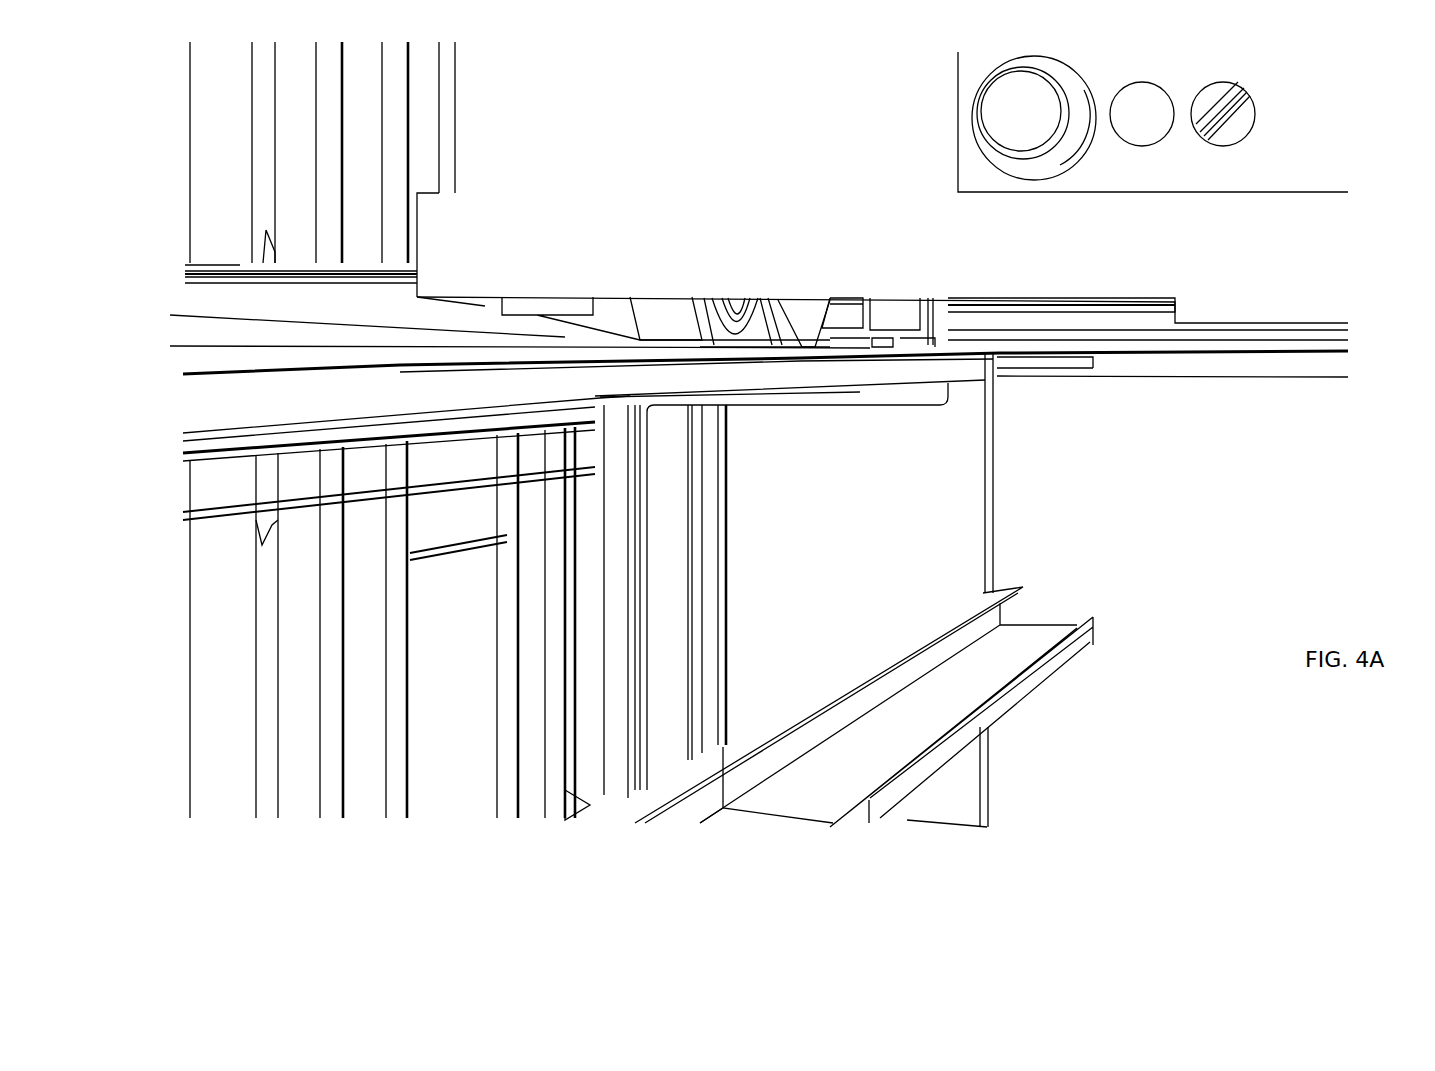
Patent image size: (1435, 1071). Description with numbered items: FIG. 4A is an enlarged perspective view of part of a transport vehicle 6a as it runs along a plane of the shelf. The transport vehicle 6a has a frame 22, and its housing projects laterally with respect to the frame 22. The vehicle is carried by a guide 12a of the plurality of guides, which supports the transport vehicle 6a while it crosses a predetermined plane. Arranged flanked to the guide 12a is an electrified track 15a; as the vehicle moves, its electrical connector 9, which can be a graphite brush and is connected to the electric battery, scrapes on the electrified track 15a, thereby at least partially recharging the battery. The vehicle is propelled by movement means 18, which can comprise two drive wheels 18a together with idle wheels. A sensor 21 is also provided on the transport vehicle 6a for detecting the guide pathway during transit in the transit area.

The frame 22 is at (505, 87).
The guide 12a is at (754, 329).
The drive wheel 18a is at (665, 325).
The movement means 18 is at (747, 357).
The electrified track 15a is at (870, 355).
The electrical connector 9 is at (898, 320).
The transport vehicle 6a is at (1073, 255).
The sensor 21 is at (1145, 128).